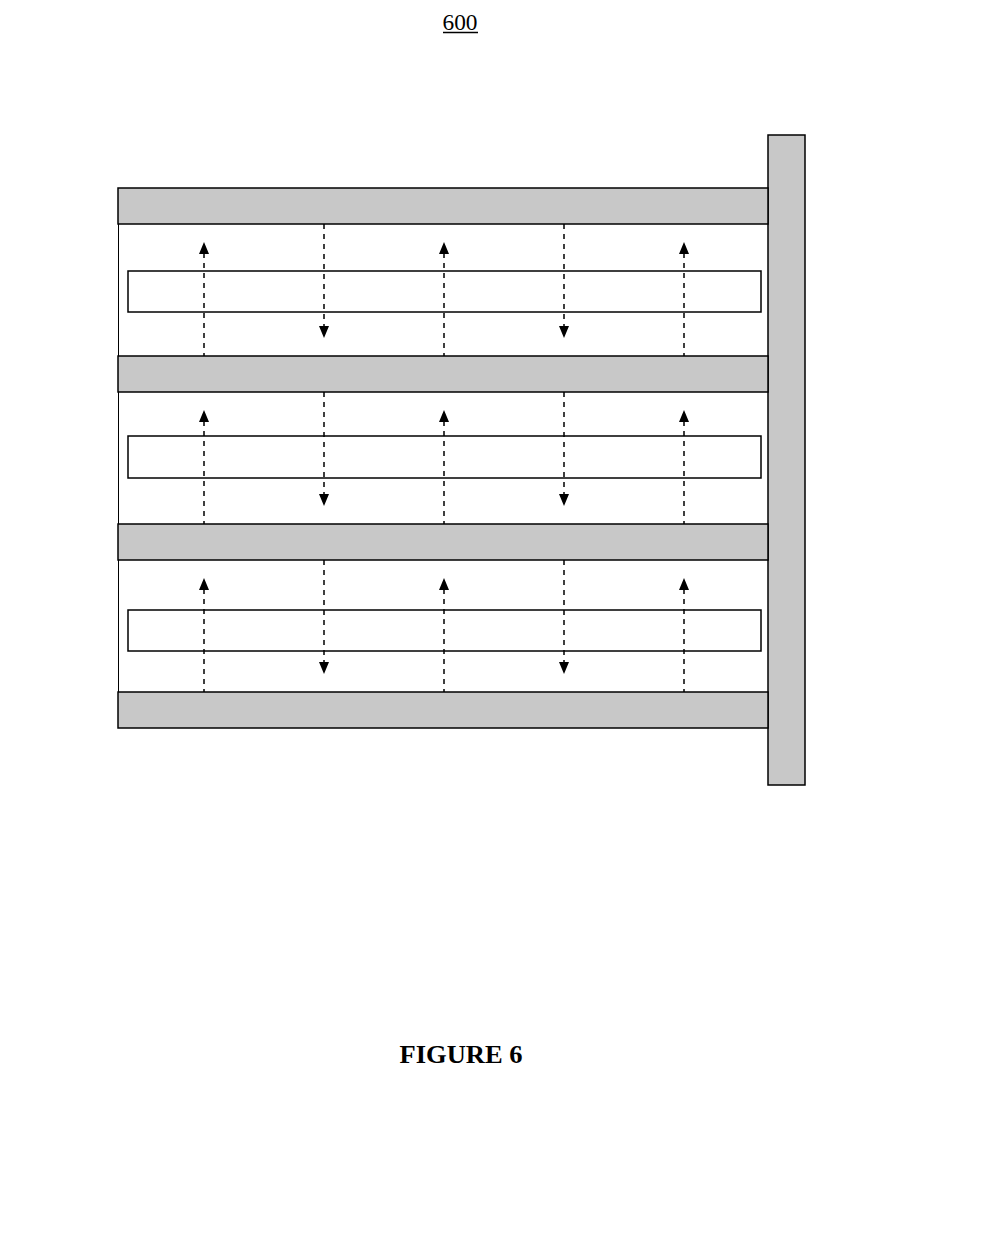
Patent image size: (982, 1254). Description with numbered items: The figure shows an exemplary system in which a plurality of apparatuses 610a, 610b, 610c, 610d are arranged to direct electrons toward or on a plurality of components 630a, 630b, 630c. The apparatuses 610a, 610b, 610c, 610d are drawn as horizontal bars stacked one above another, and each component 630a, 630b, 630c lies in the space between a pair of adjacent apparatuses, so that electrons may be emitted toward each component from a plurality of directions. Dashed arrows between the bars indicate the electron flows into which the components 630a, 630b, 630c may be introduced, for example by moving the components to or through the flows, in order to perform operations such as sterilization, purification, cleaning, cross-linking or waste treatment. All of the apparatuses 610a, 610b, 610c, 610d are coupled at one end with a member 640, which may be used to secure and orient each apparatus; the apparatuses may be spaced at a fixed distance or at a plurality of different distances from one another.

The apparatus 610a is at (128, 205).
The apparatus 610b is at (128, 373).
The apparatus 610c is at (128, 541).
The apparatus 610d is at (128, 709).
The component 630a is at (138, 293).
The component 630b is at (138, 458).
The component 630c is at (138, 636).
The member 640 is at (787, 777).